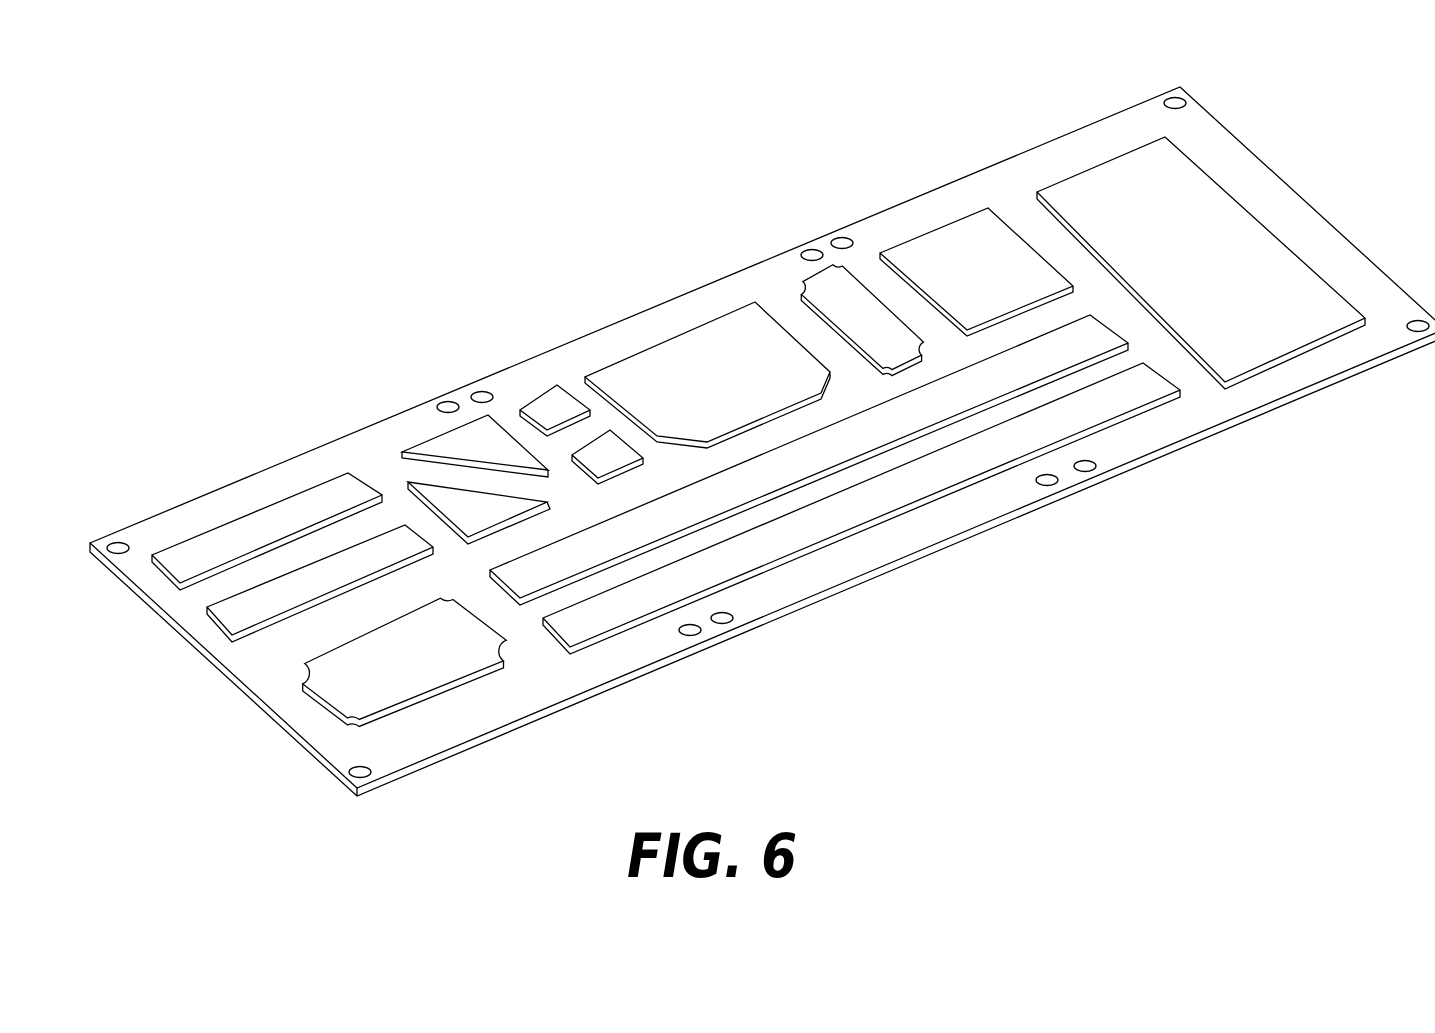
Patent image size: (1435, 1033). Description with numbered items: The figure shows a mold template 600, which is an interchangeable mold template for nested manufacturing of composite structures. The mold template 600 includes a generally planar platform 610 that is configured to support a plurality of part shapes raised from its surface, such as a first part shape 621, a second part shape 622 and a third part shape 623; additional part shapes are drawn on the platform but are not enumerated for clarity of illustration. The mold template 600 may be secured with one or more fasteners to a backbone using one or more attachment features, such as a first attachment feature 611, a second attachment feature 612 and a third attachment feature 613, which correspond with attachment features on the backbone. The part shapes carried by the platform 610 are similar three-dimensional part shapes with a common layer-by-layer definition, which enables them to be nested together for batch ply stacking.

The mold template 600 is at (377, 127).
The generally planar platform 610 is at (1000, 190).
The first attachment feature 611 is at (115, 540).
The second attachment feature 612 is at (440, 402).
The third attachment feature 613 is at (478, 392).
The first part shape 621 is at (188, 558).
The second part shape 622 is at (232, 612).
The third part shape 623 is at (332, 688).